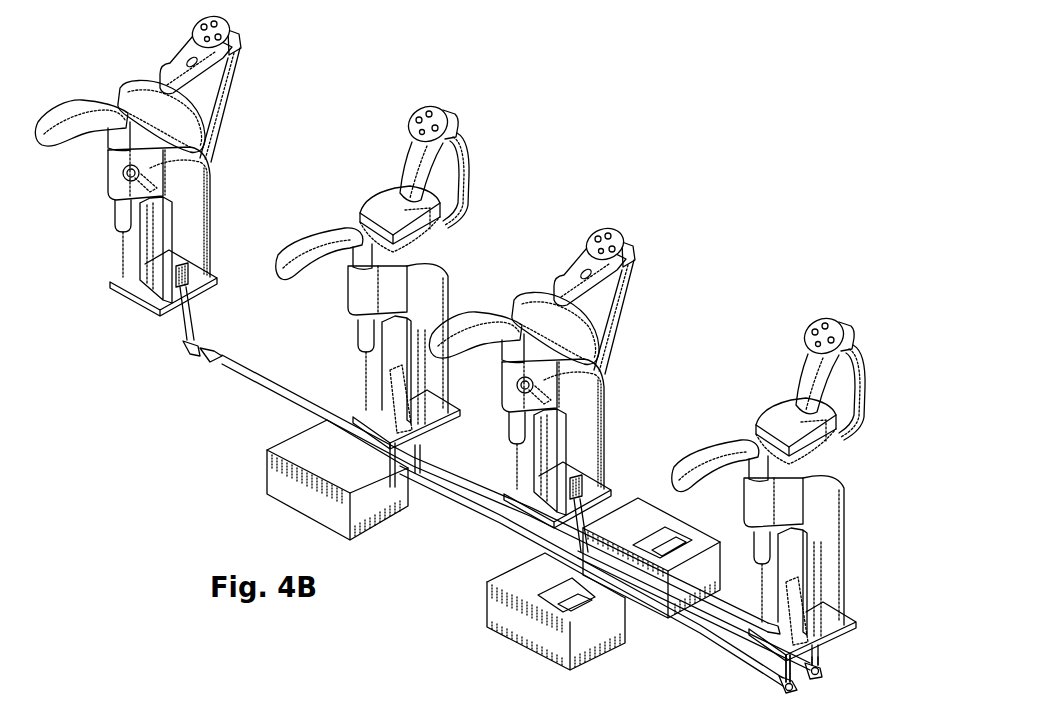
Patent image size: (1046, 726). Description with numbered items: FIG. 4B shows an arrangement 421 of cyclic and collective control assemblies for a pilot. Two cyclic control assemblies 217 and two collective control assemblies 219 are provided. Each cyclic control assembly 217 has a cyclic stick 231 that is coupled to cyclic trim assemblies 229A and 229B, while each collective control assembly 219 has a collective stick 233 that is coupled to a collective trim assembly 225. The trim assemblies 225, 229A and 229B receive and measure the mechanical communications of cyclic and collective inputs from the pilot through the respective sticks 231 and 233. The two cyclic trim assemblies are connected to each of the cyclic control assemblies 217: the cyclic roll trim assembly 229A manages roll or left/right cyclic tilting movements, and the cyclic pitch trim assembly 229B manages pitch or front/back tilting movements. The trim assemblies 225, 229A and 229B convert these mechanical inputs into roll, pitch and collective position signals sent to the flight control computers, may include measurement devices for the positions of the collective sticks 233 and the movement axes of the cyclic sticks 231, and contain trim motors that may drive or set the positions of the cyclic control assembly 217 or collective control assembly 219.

The cyclic control assembly 217 is at (358, 210).
The collective control assembly 219 is at (118, 82).
The collective trim assembly 225 is at (293, 507).
The cyclic roll trim assembly 229A is at (510, 640).
The cyclic pitch trim assembly 229B is at (657, 503).
The cyclic stick 231 is at (400, 167).
The collective stick 233 is at (173, 63).
The arrangement of cyclic and collective control assemblies 421 is at (736, 208).